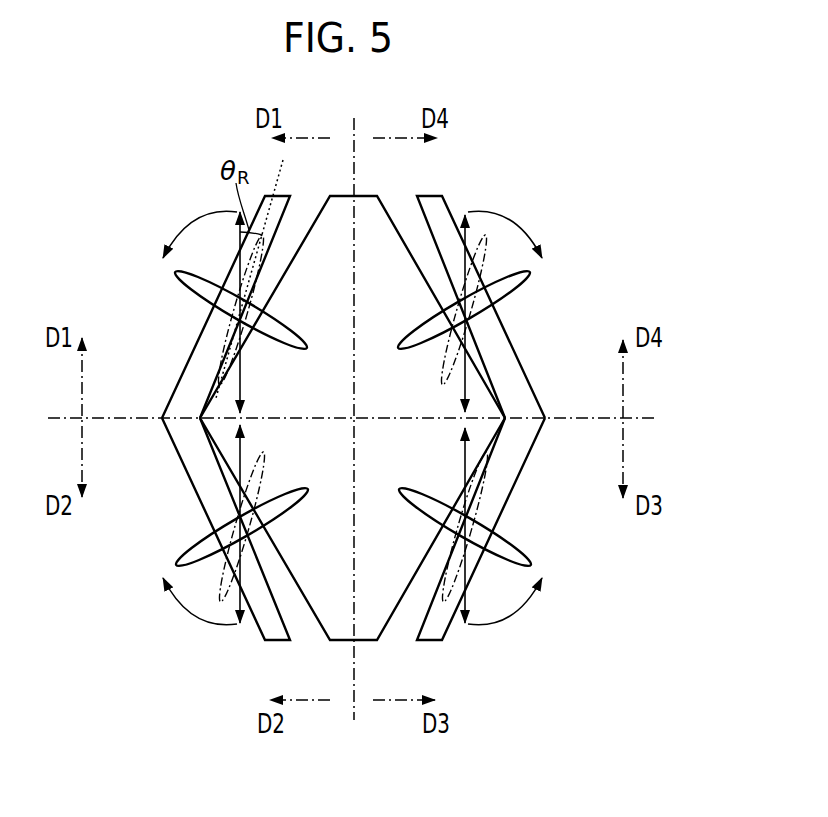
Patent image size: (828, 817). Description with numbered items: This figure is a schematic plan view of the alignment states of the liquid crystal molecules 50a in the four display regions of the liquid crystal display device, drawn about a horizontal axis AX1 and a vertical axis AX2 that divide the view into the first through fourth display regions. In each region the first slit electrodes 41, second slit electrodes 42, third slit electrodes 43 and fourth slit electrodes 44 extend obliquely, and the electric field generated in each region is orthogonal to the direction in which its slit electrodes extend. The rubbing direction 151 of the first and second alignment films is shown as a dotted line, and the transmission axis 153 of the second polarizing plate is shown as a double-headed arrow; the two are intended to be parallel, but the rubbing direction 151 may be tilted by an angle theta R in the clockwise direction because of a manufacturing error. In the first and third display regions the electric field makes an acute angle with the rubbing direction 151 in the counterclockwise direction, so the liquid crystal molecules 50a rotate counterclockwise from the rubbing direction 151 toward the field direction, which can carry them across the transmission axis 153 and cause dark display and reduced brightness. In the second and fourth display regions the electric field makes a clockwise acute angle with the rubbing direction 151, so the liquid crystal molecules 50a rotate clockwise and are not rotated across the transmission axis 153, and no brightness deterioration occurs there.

The first slit electrodes 41 is at (177, 388).
The second slit electrodes 42 is at (177, 452).
The third slit electrodes 43 is at (528, 452).
The fourth slit electrodes 44 is at (528, 388).
The liquid crystal molecules 50a is at (207, 292).
The rubbing direction 151 is at (284, 169).
The transmission axis 153 is at (246, 378).
The first axis AX1 is at (650, 414).
The second axis AX2 is at (350, 122).